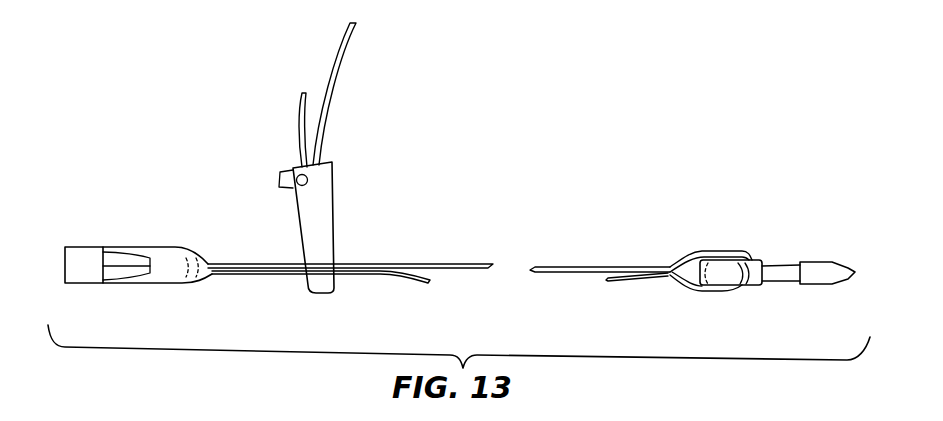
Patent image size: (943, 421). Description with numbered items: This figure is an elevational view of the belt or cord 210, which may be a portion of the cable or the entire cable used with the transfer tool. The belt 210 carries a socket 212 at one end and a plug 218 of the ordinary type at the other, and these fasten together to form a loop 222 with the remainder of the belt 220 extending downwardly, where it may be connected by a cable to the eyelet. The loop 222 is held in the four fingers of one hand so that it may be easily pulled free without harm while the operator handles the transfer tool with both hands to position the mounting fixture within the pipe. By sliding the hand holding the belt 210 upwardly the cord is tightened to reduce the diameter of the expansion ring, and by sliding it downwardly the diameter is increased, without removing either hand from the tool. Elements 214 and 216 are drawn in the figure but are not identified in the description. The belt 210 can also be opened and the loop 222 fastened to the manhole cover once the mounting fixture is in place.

The belt or cord 210 is at (472, 164).
The socket 212 is at (167, 257).
The clip body 214 is at (313, 207).
The wire shaft 216 is at (570, 267).
The plug 218 is at (827, 272).
The remainder of the belt 220 is at (338, 52).
The loop 222 is at (732, 248).